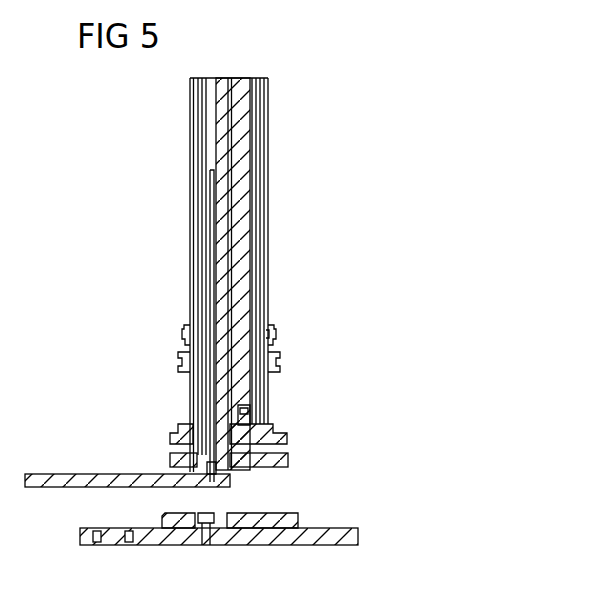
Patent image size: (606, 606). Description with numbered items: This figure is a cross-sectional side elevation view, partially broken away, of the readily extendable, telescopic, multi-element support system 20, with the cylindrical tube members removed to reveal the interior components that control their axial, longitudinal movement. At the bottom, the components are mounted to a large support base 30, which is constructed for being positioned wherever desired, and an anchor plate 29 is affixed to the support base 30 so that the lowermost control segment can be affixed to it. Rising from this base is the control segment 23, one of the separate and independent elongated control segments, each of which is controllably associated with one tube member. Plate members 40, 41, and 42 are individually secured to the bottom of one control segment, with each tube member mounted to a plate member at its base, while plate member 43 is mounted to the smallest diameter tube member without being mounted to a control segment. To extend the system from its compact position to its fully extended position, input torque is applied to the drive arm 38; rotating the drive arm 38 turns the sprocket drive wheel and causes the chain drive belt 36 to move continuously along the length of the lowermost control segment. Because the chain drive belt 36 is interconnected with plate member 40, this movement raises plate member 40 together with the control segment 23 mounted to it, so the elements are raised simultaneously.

The multi-element support system 20 is at (281, 275).
The control segment 23 is at (238, 242).
The chain drive belt 36 is at (212, 200).
The plate member 43 is at (270, 342).
The plate member 42 is at (278, 355).
The plate member 41 is at (281, 421).
The anchor plate 29 is at (300, 432).
The drive arm 38 is at (103, 473).
The plate member 40 is at (172, 506).
The support base 30 is at (312, 538).